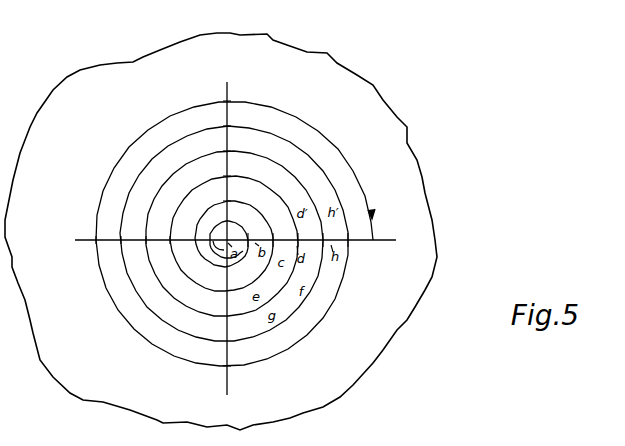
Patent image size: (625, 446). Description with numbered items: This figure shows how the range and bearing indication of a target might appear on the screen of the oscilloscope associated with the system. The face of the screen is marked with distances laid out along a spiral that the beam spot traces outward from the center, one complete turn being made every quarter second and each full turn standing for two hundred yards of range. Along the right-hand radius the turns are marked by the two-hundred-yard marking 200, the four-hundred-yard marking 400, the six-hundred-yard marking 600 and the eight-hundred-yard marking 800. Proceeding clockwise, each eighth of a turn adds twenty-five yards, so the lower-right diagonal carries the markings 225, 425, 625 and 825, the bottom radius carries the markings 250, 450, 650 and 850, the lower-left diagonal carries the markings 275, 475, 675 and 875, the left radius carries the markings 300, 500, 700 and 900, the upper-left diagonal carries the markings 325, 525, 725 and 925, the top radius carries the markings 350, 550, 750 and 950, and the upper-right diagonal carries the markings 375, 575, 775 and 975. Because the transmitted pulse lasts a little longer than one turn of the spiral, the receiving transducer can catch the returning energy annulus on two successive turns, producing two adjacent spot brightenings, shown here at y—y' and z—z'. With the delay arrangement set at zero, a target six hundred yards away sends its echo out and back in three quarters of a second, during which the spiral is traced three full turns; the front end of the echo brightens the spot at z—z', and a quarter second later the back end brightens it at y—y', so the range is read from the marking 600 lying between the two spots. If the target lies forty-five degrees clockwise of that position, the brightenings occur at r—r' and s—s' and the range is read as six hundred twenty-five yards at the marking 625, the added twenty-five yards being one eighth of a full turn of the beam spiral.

The range marking 200 is at (264, 232).
The range marking 225 is at (251, 263).
The range marking 250 is at (221, 276).
The range marking 275 is at (197, 271).
The range marking 300 is at (186, 241).
The range marking 325 is at (195, 207).
The range marking 350 is at (223, 192).
The range marking 375 is at (263, 198).
The range marking 400 is at (287, 232).
The range marking 425 is at (269, 281).
The range marking 450 is at (221, 301).
The range marking 475 is at (181, 287).
The range marking 500 is at (161, 242).
The range marking 525 is at (178, 192).
The range marking 550 is at (223, 166).
The range marking 575 is at (283, 180).
The range marking 600 is at (312, 232).
The range marking 625 is at (288, 298).
The range marking 650 is at (221, 328).
The range marking 675 is at (162, 307).
The range marking 700 is at (135, 242).
The range marking 725 is at (159, 173).
The range marking 750 is at (223, 141).
The range marking 775 is at (301, 163).
The range marking 800 is at (337, 232).
The range marking 825 is at (306, 319).
The range marking 850 is at (221, 355).
The range marking 875 is at (140, 324).
The range marking 900 is at (107, 242).
The range marking 925 is at (141, 155).
The range marking 950 is at (223, 116).
The range marking 975 is at (320, 146).